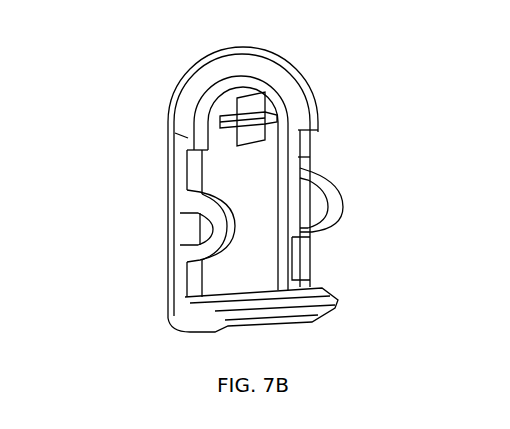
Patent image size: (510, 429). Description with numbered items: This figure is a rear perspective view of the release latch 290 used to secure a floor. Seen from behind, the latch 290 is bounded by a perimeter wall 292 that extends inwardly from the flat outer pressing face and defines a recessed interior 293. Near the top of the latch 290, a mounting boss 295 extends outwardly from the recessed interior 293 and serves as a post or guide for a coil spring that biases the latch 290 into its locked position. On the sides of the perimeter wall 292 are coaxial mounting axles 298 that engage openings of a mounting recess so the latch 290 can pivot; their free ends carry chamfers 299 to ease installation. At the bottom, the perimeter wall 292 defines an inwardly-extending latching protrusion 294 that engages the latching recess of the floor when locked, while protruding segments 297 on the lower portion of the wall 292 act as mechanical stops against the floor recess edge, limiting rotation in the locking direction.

The release latch 290 is at (150, 107).
The perimeter wall 292 is at (315, 97).
The recessed interior 293 is at (272, 163).
The boss 295 is at (257, 107).
The axles 298 is at (190, 216).
The chamfers 299 is at (198, 234).
The protruding segments 297 is at (190, 300).
The latching protrusion 294 is at (315, 304).